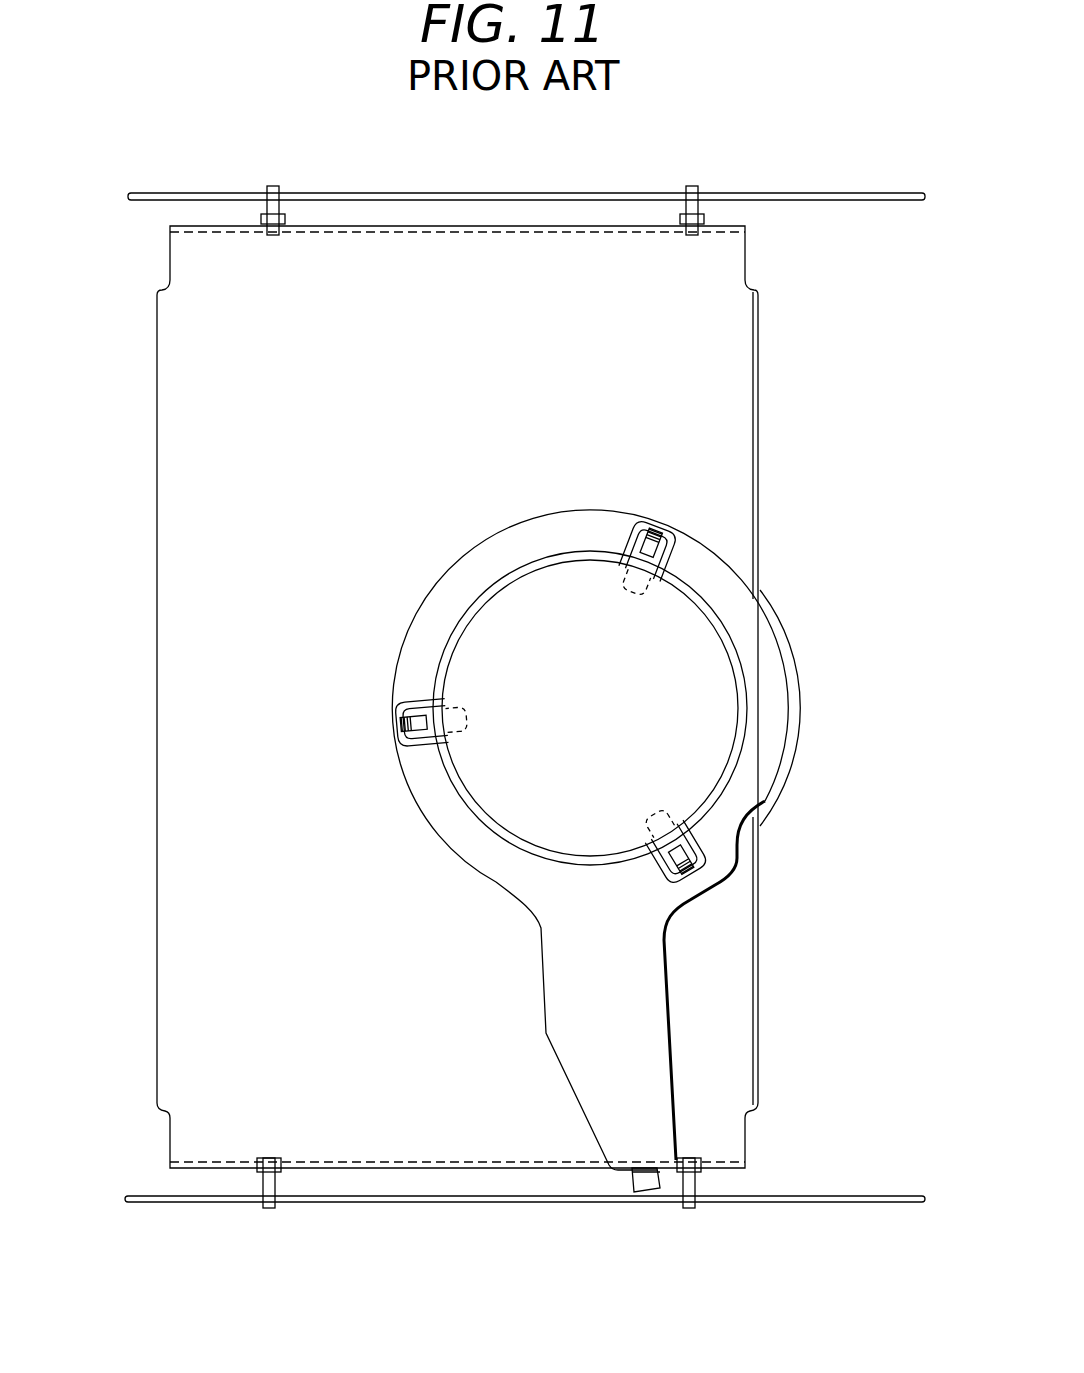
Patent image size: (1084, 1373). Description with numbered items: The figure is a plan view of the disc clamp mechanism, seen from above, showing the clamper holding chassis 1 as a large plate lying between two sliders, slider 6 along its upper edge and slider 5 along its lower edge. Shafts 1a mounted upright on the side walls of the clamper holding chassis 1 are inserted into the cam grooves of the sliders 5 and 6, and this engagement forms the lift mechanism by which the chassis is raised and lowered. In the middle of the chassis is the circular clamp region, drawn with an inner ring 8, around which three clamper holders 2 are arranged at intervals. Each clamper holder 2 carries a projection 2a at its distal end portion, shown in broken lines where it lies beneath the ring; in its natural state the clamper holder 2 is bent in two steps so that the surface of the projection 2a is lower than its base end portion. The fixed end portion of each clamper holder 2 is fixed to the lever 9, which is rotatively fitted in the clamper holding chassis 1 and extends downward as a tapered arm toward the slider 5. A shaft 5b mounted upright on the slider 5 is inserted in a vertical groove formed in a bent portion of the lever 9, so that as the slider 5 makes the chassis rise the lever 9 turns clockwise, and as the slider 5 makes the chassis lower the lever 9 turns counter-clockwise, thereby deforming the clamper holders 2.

The clamper holding chassis 1 is at (728, 367).
The shaft 1a is at (280, 207).
The clamper holder 2 is at (640, 570).
The projection 2a is at (620, 578).
The slider 5 is at (160, 1203).
The shaft 5b is at (648, 1193).
The slider 6 is at (544, 193).
The ring 8 is at (710, 667).
The lever 9 is at (650, 1014).